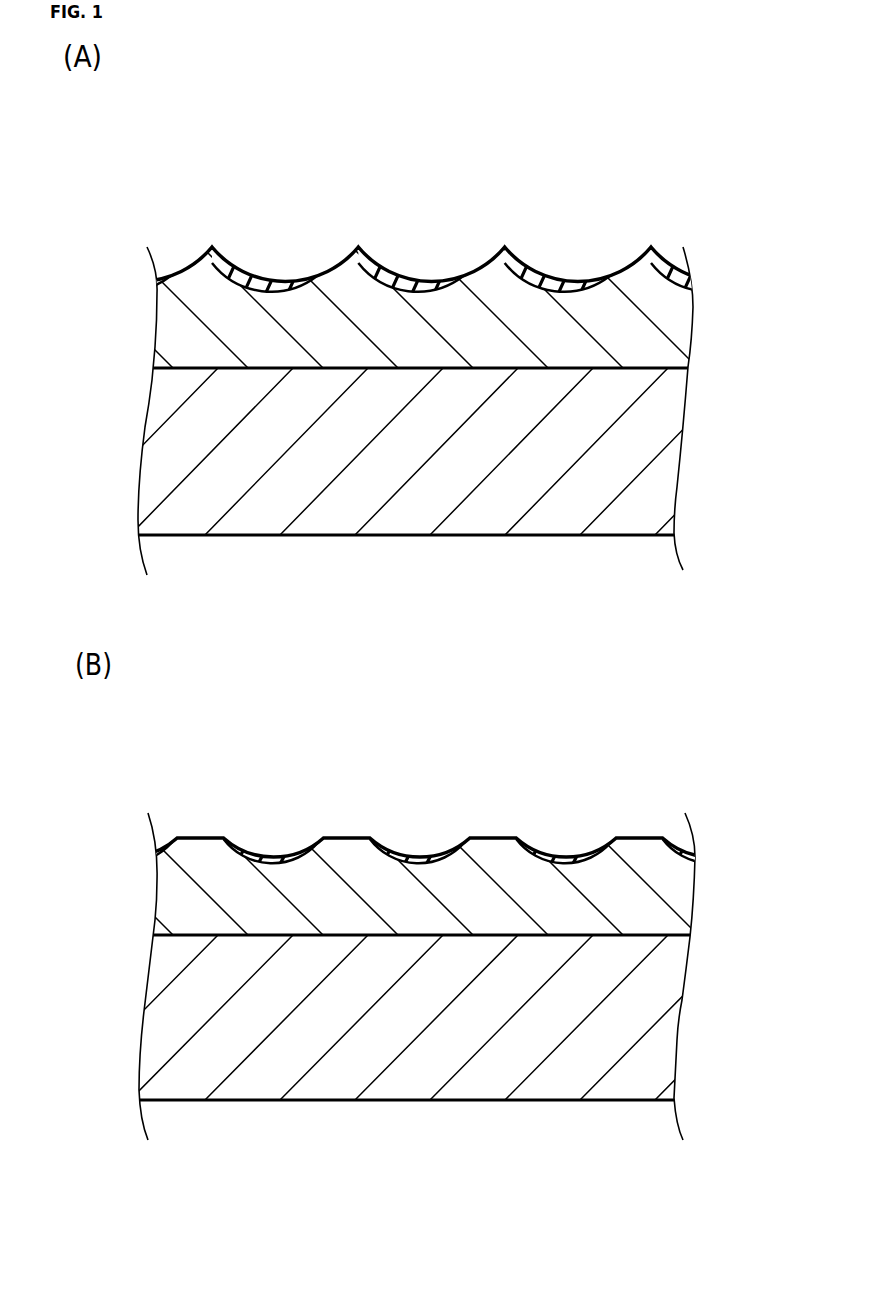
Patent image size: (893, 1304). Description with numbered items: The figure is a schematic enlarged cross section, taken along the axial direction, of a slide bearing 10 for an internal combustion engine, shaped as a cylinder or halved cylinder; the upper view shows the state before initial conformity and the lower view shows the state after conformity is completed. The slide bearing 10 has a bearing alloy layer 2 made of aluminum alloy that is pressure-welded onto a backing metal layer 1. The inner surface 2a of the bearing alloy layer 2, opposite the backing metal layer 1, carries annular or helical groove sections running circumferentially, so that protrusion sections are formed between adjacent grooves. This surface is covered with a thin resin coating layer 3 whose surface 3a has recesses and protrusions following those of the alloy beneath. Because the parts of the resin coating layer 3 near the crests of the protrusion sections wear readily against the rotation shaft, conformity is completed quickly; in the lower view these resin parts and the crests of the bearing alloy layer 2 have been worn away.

The slide bearing 10 is at (686, 188).
The backing metal layer 1 is at (603, 472).
The bearing alloy layer 2 is at (630, 330).
The surface of the bearing alloy layer 2a is at (597, 278).
The resin coating layer 3 is at (333, 272).
The surface of the resin coating layer 3a is at (450, 278).